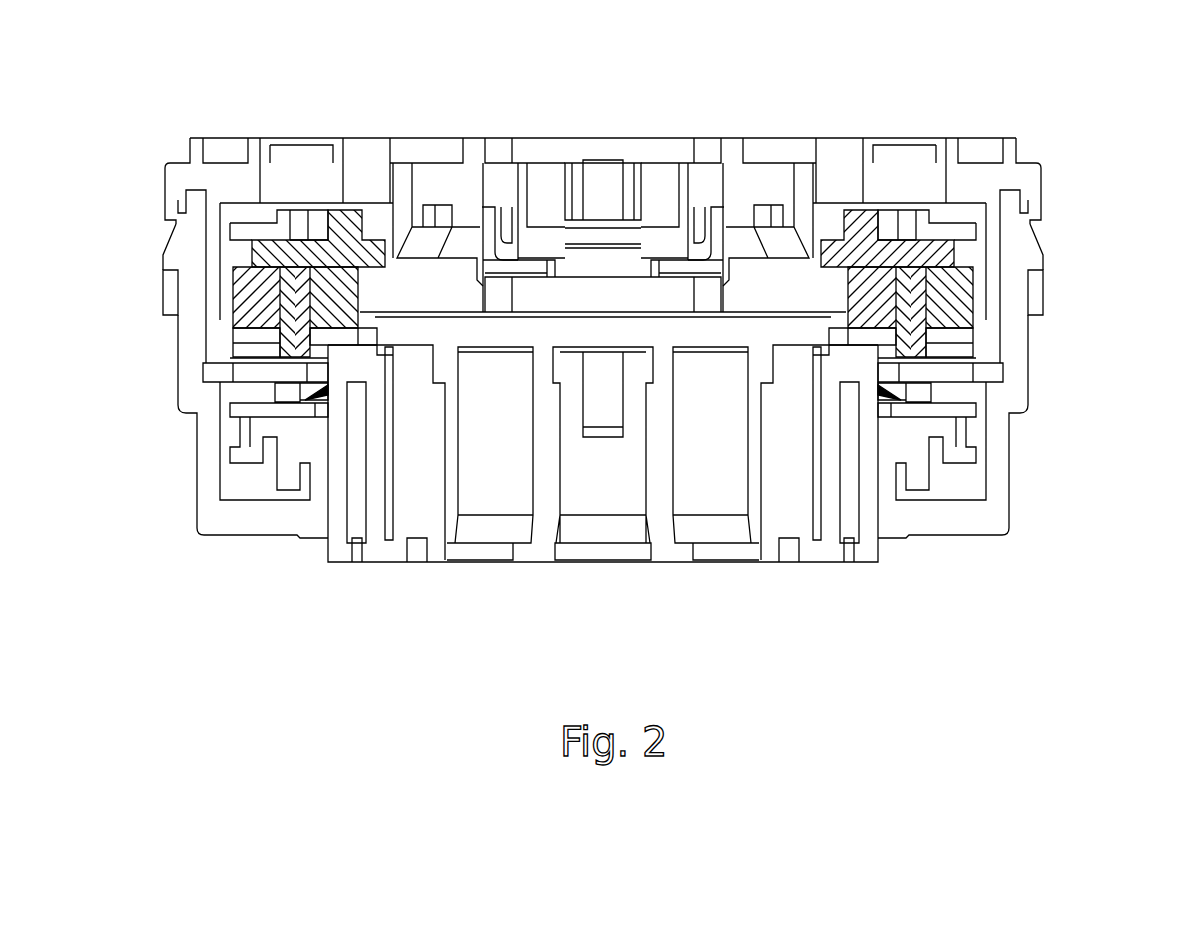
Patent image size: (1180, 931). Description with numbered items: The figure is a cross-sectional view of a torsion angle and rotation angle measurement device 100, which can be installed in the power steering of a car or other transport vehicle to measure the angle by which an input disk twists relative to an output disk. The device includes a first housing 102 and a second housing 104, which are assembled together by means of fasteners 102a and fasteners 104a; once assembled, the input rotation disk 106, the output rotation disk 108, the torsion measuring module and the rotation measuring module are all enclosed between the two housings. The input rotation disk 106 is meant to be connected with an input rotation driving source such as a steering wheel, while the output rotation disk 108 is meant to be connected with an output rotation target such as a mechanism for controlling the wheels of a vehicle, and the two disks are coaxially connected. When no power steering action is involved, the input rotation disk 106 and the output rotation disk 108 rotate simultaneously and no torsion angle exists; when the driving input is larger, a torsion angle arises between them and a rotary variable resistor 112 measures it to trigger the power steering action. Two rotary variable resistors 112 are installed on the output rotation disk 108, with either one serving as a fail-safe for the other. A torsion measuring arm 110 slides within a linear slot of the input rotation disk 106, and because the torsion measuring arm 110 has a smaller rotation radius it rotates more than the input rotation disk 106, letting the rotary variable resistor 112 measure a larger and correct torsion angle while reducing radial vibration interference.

The torsion angle and rotation angle measurement device 100 is at (1110, 48).
The first housing 102 is at (906, 183).
The fasteners 102a is at (1037, 290).
The second housing 104 is at (948, 512).
The fasteners 104a is at (1030, 253).
The input rotation disk 106 is at (661, 193).
The output rotation disk 108 is at (493, 483).
The torsion measuring arm 110 is at (240, 257).
The rotary variable resistor 112 is at (240, 305).